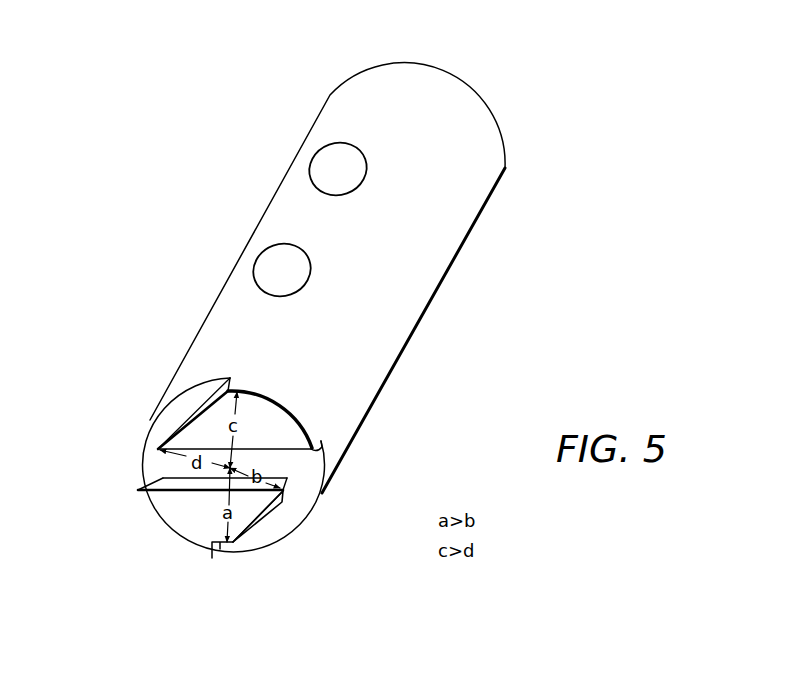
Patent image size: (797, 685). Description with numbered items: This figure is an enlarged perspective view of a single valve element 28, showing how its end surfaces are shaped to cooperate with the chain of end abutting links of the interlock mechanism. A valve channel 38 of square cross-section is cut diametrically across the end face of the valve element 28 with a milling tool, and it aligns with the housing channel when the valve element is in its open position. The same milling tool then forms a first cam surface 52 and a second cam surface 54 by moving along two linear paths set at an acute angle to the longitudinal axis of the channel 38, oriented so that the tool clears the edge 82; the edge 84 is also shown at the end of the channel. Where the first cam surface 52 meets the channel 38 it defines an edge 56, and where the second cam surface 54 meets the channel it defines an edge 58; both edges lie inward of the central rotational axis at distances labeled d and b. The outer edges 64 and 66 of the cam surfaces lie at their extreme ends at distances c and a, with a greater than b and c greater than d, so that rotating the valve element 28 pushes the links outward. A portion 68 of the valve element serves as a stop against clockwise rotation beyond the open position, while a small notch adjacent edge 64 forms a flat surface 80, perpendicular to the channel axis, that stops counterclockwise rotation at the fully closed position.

The valve element 28 is at (497, 173).
The first cam surface 52 is at (200, 407).
The edge of second cam surface 66 is at (232, 385).
The edge of first cam surface 56 is at (158, 447).
The edge 82 is at (312, 447).
The portion of the valve element 68 is at (318, 443).
The valve channel 38 is at (160, 480).
The edge of second cam surface 58 is at (290, 480).
The slot side edge 84 is at (140, 488).
The second cam surface 54 is at (272, 513).
The edge of first cam surface 64 is at (247, 533).
The flat surface 80 is at (216, 549).